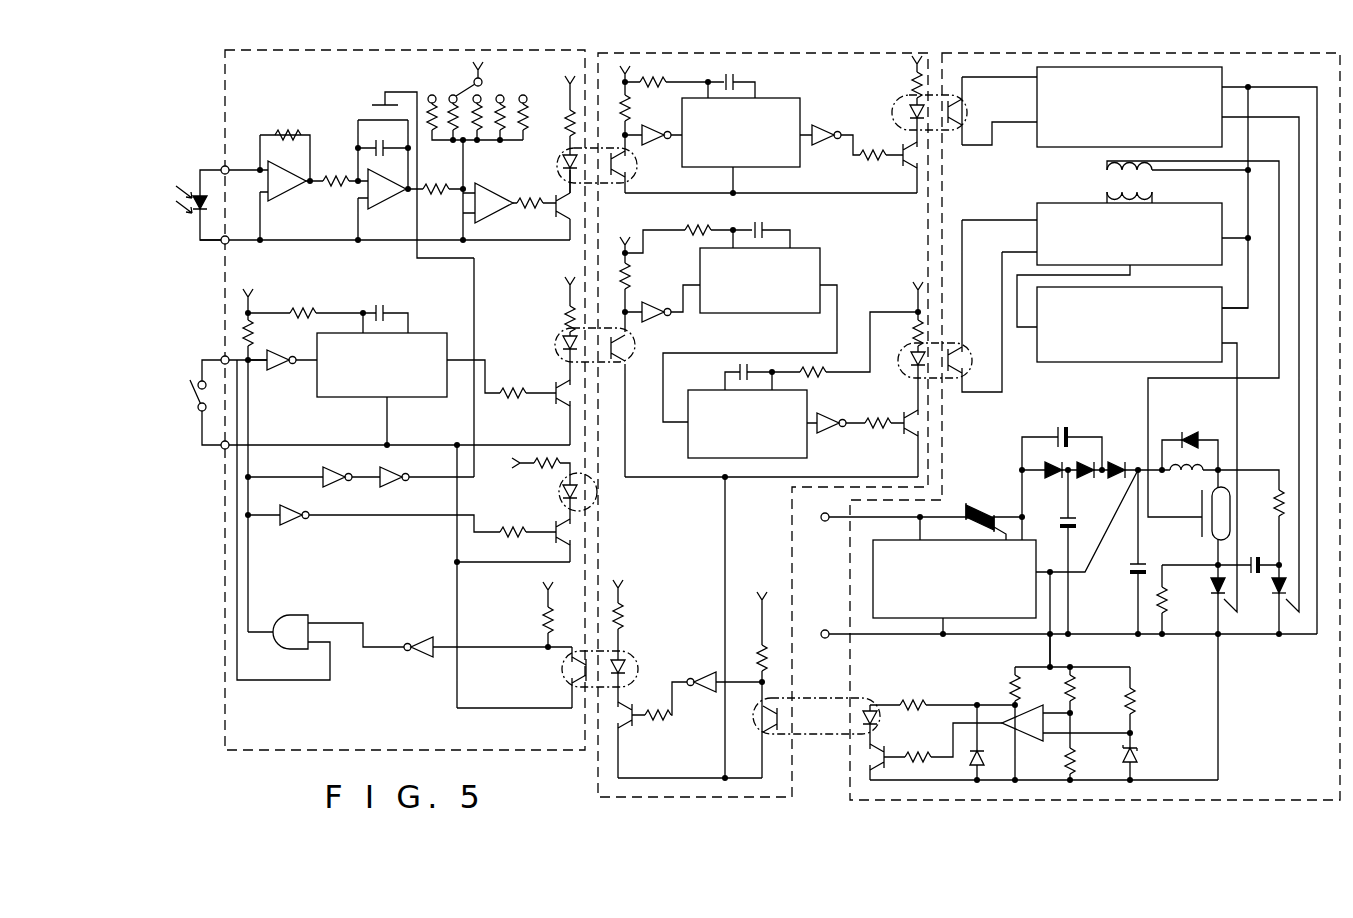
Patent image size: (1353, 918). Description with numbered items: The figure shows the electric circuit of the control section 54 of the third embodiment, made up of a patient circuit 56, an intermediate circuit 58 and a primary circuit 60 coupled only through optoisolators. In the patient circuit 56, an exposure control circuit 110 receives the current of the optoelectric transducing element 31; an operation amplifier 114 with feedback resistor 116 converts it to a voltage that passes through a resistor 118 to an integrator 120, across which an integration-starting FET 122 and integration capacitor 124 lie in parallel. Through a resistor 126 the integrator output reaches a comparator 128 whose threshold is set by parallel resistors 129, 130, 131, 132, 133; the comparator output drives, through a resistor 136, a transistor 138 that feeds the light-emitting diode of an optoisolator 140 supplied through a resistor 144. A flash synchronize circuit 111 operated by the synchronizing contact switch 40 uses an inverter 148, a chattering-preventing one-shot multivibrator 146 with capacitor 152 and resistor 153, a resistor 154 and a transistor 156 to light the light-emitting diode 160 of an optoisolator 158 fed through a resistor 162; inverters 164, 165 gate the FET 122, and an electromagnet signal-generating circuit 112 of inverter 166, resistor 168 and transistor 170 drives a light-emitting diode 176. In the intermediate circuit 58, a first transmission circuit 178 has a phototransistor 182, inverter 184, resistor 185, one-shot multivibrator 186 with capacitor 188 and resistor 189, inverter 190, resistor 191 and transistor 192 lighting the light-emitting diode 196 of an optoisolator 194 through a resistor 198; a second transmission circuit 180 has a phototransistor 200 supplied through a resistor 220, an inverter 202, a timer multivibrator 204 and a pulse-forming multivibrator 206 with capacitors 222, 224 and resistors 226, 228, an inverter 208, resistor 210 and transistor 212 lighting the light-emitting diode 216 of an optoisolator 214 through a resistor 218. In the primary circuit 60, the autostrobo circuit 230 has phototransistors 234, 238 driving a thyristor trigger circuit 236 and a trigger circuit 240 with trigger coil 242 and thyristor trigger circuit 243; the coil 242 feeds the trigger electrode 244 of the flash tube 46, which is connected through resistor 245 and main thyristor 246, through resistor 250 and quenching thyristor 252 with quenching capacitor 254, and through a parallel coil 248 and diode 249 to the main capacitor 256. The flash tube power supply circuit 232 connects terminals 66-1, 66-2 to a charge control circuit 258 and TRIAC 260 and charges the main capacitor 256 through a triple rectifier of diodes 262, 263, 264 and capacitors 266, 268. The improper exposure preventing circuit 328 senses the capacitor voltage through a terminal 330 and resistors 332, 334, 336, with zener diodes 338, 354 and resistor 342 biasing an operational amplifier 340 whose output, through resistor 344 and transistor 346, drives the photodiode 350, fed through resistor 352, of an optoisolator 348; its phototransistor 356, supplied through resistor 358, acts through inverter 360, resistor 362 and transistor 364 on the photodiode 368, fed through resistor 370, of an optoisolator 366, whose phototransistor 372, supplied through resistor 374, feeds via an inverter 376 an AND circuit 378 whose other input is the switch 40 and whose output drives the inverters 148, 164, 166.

The optoelectric transducing element 31 is at (195, 222).
The synchronizing contact switch 40 is at (192, 400).
The flash tube 46 is at (1231, 511).
The control section 54 is at (373, 422).
The patient circuit 56 is at (224, 705).
The intermediate circuit 58 is at (598, 793).
The primary circuit 60 is at (849, 770).
The terminal of primary winding 66-1 is at (826, 523).
The terminal of primary winding 66-2 is at (826, 630).
The exposure control circuit 110 is at (399, 159).
The flash synchronize circuit 111 is at (434, 350).
The electromagnet signal-generating circuit 112 is at (422, 505).
The operation amplifier 114 is at (292, 196).
The resistor 116 is at (283, 131).
The resistor 118 is at (336, 186).
The integrator 120 is at (392, 206).
The integration-starting FET 122 is at (372, 112).
The integration capacitor 124 is at (374, 141).
The resistor 126 is at (440, 194).
The comparator 128 is at (492, 222).
The resistor 129 is at (440, 136).
The resistor 130 is at (471, 110).
The resistor 131 is at (472, 136).
The resistor 132 is at (501, 97).
The resistor 133 is at (524, 135).
The resistor 136 is at (533, 200).
The NPN transistor 138 is at (560, 220).
The optoisolator 140 is at (604, 184).
The resistor 144 is at (568, 122).
The one-shot multivibrator 146 is at (355, 398).
The inverter 148 is at (284, 372).
The capacitor 152 is at (380, 305).
The resistor 153 is at (303, 310).
The resistor 154 is at (505, 400).
The NPN transistor 156 is at (563, 404).
The optoisolator 158 is at (553, 380).
The light-emitting diode 160 is at (555, 344).
The resistor 162 is at (566, 311).
The inverter 164 is at (337, 470).
The inverter 165 is at (404, 470).
The inverter 166 is at (287, 505).
The resistor 168 is at (513, 530).
The NPN transistor 170 is at (549, 547).
The light emitting diode 176 is at (557, 489).
The first transmission circuit 178 is at (759, 132).
The second transmission circuit 180 is at (788, 333).
The phototransistor 182 is at (630, 173).
The inverter 184 is at (646, 143).
The resistor 185 is at (631, 111).
The one-shot multivibrator 186 is at (766, 168).
The capacitor 188 is at (738, 81).
The resistor 189 is at (663, 81).
The inverter 190 is at (831, 146).
The resistor 191 is at (878, 150).
The NPN transistor 192 is at (907, 182).
The optoisolator 194 is at (966, 109).
The light-emitting diode 196 is at (910, 108).
The resistor 198 is at (908, 81).
The phototransistor 200 is at (632, 369).
The inverter 202 is at (661, 323).
The multivibrator 204 is at (771, 315).
The multivibrator 206 is at (688, 459).
The inverter 208 is at (827, 440).
The resistor 210 is at (882, 434).
The NPN transistor 212 is at (921, 431).
The optoisolator 214 is at (967, 324).
The light-emitting diode 216 is at (913, 371).
The resistor 218 is at (914, 339).
The resistor 220 is at (632, 272).
The capacitor 222 is at (767, 222).
The capacitor 224 is at (725, 373).
The resistor 226 is at (695, 225).
The resistor 228 is at (823, 378).
The autostrobo circuit 230 is at (1132, 350).
The flash tube power supply circuit 232 is at (1146, 562).
The phototransistor 234 is at (965, 105).
The thyristor trigger circuit 236 is at (1037, 140).
The phototransistor 238 is at (956, 381).
The trigger circuit 240 is at (1080, 203).
The trigger coil 242 is at (1156, 172).
The thyristor trigger circuit 243 is at (1225, 317).
The trigger electrode 244 is at (1200, 504).
The resistor 245 is at (1168, 591).
The main thyristor 246 is at (1212, 601).
The coil 248 is at (1192, 432).
The diode 249 is at (1187, 425).
The resistor 250 is at (1279, 488).
The quenching thyristor 252 is at (1277, 638).
The quenching capacitor 254 is at (1250, 561).
The main capacitor 256 is at (1135, 583).
The charge control circuit 258 is at (1030, 623).
The TRIAC 260 is at (979, 509).
The diode 262 is at (1048, 462).
The diode 263 is at (1086, 479).
The diode 264 is at (1117, 462).
The capacitor 266 is at (1064, 425).
The capacitor 268 is at (1060, 516).
The improper exposure preventing circuit 328 is at (1088, 730).
The line 330 is at (1054, 575).
The resistor 332 is at (1138, 701).
The resistor 334 is at (1074, 685).
The resistor 336 is at (1012, 693).
The zener diode 338 is at (1141, 758).
The operational amplifier 340 is at (1033, 746).
The resistor 342 is at (1078, 757).
The resistor 344 is at (920, 752).
The NPN transistor 346 is at (889, 771).
The optoisolator 348 is at (823, 703).
The photodiode 350 is at (869, 706).
The resistor 352 is at (914, 700).
The zener diode 354 is at (980, 773).
The phototransistor 356 is at (785, 720).
The resistor 358 is at (758, 650).
The inverter 360 is at (703, 671).
The resistor 362 is at (669, 721).
The NPN transistor 364 is at (638, 736).
The optoisolator 366 is at (628, 621).
The photodiode 368 is at (629, 669).
The resistor 370 is at (629, 607).
The phototransistor 372 is at (566, 671).
The resistor 374 is at (545, 619).
The inverter 376 is at (420, 637).
The AND circuit 378 is at (297, 615).